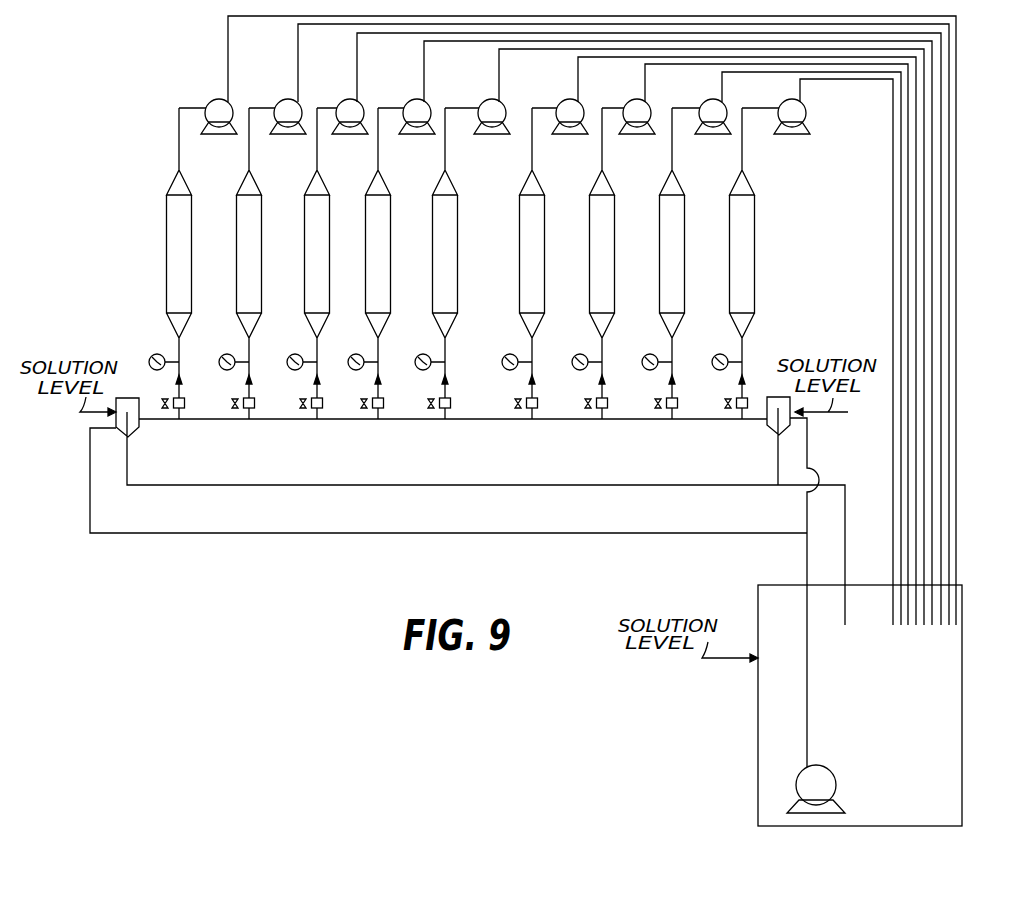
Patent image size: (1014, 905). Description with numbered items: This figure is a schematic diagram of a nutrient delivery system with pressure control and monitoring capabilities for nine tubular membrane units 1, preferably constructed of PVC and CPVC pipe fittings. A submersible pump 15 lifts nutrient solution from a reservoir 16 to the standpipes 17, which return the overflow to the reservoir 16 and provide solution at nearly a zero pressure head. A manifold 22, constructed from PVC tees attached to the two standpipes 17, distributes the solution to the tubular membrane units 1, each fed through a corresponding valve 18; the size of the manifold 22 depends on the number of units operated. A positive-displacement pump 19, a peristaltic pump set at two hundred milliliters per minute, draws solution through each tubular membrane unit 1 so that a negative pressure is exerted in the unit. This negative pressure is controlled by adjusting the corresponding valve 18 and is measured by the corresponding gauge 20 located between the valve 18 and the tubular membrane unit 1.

The tubular membrane unit 1 is at (167, 228).
The submersible pump 15 is at (820, 778).
The reservoir 16 is at (940, 681).
The standpipe 17 is at (139, 430).
The valve 18 is at (185, 403).
The positive-displacement pump 19 is at (217, 107).
The gauge 20 is at (156, 355).
The manifold 22 is at (556, 420).